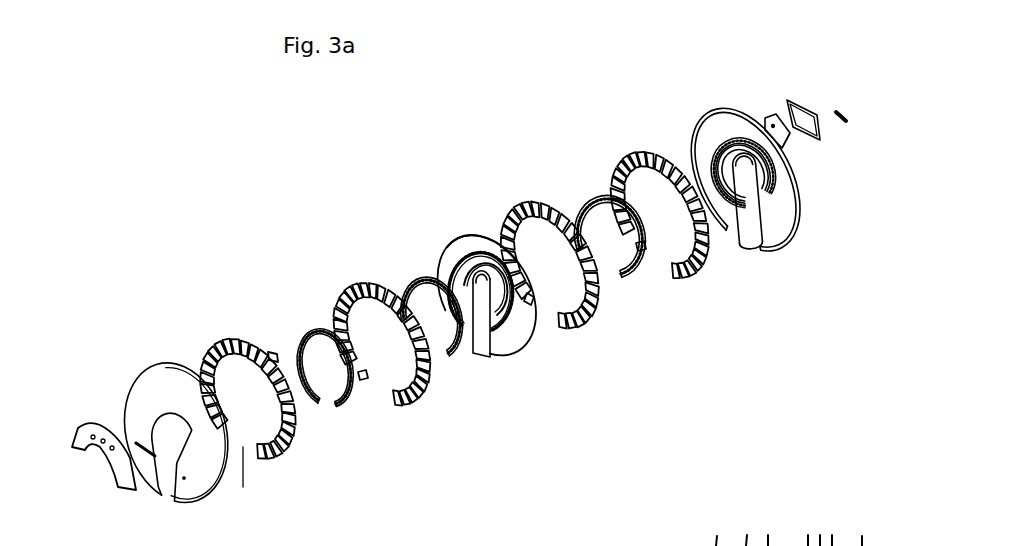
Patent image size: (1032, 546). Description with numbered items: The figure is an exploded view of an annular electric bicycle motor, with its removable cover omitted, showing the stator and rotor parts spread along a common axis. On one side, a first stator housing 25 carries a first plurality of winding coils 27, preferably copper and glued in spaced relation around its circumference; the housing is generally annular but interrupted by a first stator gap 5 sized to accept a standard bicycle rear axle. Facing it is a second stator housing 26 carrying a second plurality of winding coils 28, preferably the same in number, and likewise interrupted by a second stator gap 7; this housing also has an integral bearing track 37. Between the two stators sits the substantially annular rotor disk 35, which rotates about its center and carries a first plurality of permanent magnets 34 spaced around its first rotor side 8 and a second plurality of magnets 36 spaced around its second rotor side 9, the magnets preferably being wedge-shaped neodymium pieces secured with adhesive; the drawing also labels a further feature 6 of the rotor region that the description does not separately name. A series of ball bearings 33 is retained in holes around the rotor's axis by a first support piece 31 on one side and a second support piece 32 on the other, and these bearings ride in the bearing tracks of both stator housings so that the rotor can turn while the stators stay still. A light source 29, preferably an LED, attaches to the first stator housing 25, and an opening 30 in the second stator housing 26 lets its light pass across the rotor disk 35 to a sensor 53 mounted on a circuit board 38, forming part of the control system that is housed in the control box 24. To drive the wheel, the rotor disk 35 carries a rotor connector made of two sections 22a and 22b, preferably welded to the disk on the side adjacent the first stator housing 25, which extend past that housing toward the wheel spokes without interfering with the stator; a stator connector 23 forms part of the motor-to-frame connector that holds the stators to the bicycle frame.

The first stator gap 5 is at (263, 496).
The hub 6 is at (490, 343).
The second stator gap 7 is at (738, 236).
The first rotor side 8 is at (442, 258).
The second rotor side 9 is at (483, 228).
The rotor connector section 22a is at (82, 432).
The rotor connector section 22b is at (510, 337).
The stator connector 23 is at (850, 117).
The control box 24 is at (820, 130).
The first stator housing 25 is at (150, 390).
The second stator housing 26 is at (707, 138).
The first plurality of winding coils 27 is at (206, 338).
The second plurality of winding coils 28 is at (677, 282).
The light source 29 is at (268, 352).
The opening 30 is at (752, 140).
The first support piece 31 is at (300, 330).
The second support piece 32 is at (590, 200).
The ball bearings 33 is at (448, 362).
The first plurality of permanent magnets 34 is at (348, 290).
The rotor disk 35 is at (458, 240).
The second plurality of magnets 36 is at (522, 212).
The bearing track 37 is at (770, 215).
The circuit board 38 is at (790, 142).
The sensor 53 is at (777, 120).